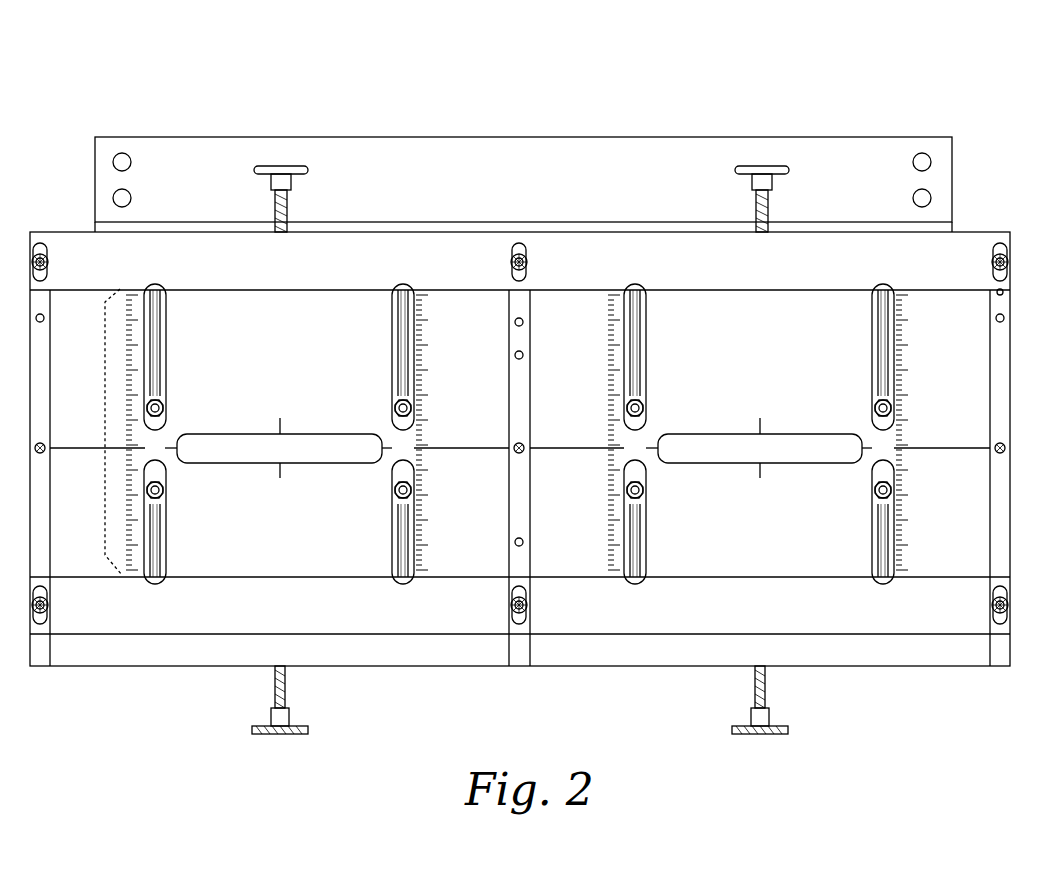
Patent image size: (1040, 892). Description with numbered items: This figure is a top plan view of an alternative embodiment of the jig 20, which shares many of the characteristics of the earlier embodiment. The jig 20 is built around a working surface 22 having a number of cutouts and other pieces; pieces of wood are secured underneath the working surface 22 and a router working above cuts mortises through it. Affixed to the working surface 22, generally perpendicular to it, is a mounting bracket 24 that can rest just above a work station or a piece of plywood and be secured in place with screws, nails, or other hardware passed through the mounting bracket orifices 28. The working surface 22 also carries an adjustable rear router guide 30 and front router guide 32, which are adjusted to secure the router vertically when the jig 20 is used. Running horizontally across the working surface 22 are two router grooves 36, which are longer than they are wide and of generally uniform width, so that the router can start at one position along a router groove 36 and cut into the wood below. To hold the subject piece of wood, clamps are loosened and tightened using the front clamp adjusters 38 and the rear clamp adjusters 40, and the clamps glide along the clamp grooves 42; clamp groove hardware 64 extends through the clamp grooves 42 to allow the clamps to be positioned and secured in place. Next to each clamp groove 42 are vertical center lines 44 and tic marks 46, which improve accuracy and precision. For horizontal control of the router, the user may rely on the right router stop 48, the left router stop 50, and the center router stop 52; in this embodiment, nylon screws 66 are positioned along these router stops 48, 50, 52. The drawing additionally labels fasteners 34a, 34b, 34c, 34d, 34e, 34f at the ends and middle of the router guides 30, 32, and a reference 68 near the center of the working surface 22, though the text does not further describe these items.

The jig 20 is at (156, 115).
The working surface 22 is at (287, 335).
The mounting bracket 24 is at (530, 188).
The mounting bracket orifices 28 is at (113, 200).
The rear router guide 30 is at (430, 613).
The front router guide 32 is at (414, 270).
The clamp knob 34a is at (991, 605).
The clamp knob 34b is at (528, 605).
The clamp knob 34c is at (49, 605).
The clamp knob 34d is at (991, 262).
The clamp knob 34e is at (528, 262).
The clamp knob 34f is at (49, 262).
The router grooves 36 is at (250, 440).
The front clamp adjusters 38 is at (283, 165).
The rear clamp adjusters 40 is at (282, 735).
The clamp grooves 42 is at (643, 333).
The vertical center lines 44 is at (284, 426).
The tic marks 46 is at (105, 418).
The right router stop 48 is at (992, 362).
The left router stop 50 is at (40, 352).
The center router stop 52 is at (532, 525).
The clamp groove hardware 64 is at (644, 410).
The nylon screws 66 is at (524, 358).
The center line 68 is at (443, 445).